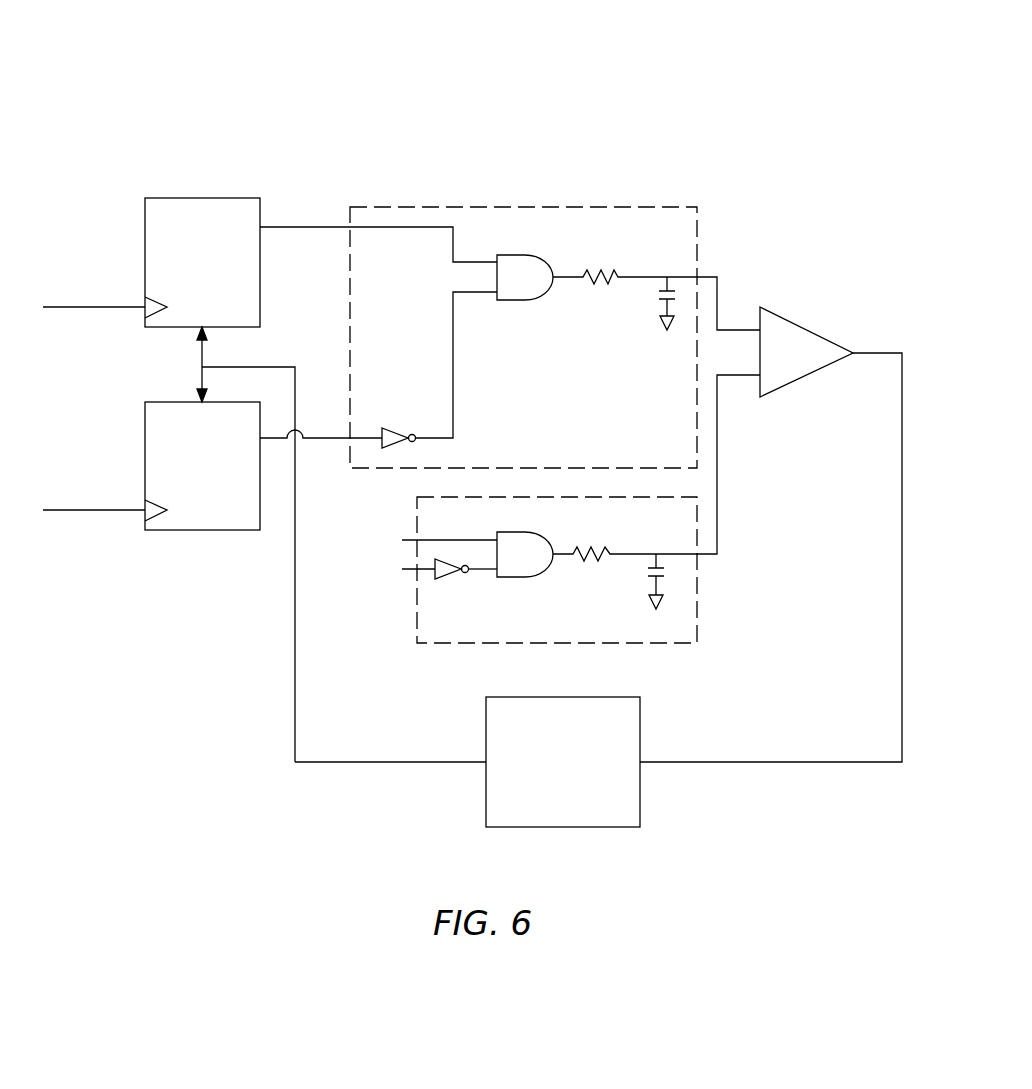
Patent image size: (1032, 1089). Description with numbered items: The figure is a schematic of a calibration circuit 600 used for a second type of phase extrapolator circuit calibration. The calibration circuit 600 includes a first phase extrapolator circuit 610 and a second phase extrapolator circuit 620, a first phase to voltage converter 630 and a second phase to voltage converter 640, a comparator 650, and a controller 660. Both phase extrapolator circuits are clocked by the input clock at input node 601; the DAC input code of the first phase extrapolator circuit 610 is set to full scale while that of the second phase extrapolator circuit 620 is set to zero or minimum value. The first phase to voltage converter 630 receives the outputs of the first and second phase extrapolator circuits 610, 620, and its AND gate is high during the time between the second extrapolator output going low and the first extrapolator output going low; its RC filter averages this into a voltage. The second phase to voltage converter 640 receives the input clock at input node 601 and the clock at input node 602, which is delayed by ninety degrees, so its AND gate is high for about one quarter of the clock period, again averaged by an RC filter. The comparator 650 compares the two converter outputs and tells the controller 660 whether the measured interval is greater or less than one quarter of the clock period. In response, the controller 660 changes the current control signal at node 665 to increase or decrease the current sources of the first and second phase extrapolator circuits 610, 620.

The calibration circuit 600 is at (788, 85).
The input node 601 is at (270, 430).
The input node 602 is at (426, 540).
The first phase extrapolator circuit 610 is at (222, 198).
The second phase extrapolator circuit 620 is at (185, 530).
The first phase to voltage converter 630 is at (615, 207).
The second phase to voltage converter 640 is at (697, 608).
The comparator 650 is at (808, 328).
The controller 660 is at (640, 724).
The node 665 is at (246, 544).